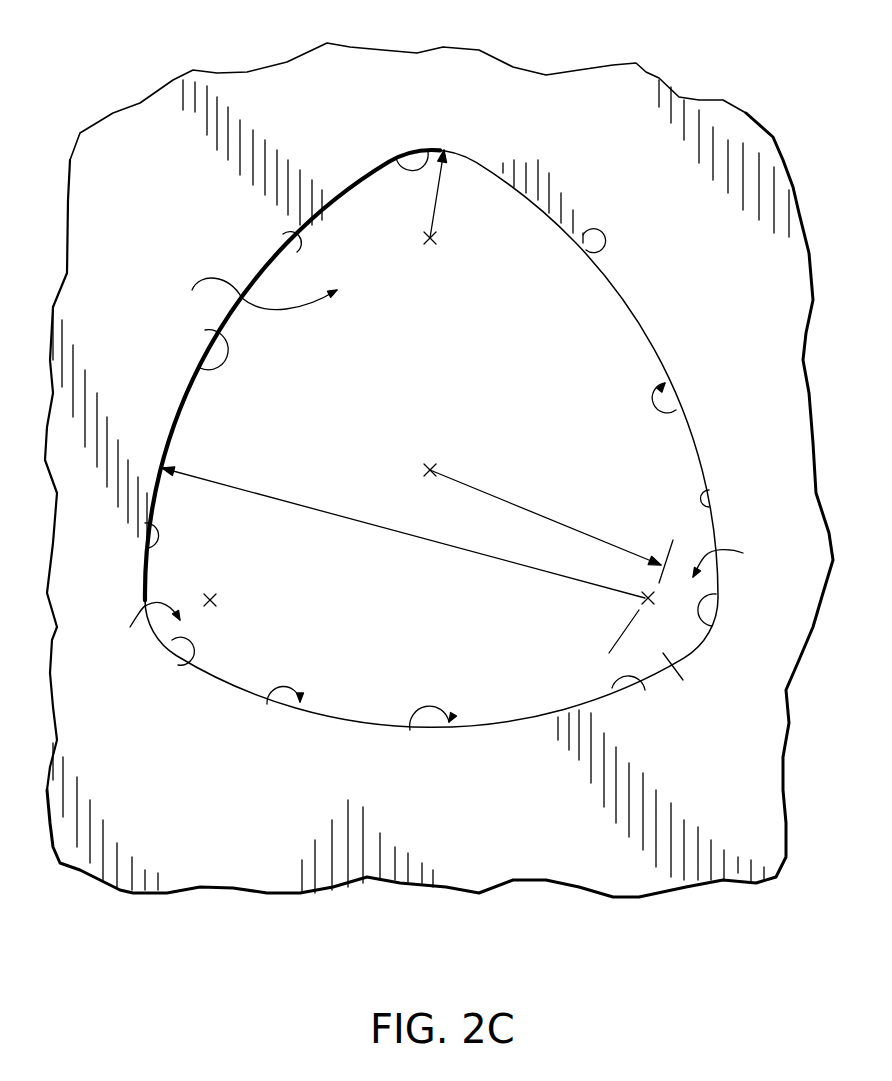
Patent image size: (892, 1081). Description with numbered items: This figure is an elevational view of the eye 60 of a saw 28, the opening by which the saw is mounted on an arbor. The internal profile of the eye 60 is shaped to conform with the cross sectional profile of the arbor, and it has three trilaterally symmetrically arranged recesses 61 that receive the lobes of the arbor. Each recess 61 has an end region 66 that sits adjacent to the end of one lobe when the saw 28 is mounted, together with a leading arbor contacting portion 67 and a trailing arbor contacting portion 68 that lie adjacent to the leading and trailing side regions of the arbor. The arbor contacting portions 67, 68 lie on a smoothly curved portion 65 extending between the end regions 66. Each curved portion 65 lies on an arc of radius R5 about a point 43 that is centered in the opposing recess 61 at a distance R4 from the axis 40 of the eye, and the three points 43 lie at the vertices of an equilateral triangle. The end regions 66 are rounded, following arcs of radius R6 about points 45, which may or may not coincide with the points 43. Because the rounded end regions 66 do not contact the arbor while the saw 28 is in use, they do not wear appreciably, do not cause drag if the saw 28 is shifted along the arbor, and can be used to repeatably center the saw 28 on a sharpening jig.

The saw 28 is at (639, 100).
The eye 60 is at (609, 347).
The point 43 is at (430, 214).
The point 45 is at (427, 250).
The axis 40 is at (425, 470).
The recess 61 is at (440, 453).
The curved portion 65 is at (205, 330).
The end region 66 is at (395, 157).
The leading arbor contacting portion 67 is at (588, 248).
The trailing arbor contacting portion 68 is at (283, 248).
The distance R4 is at (533, 510).
The radius R5 is at (400, 533).
The radius R6 is at (442, 192).